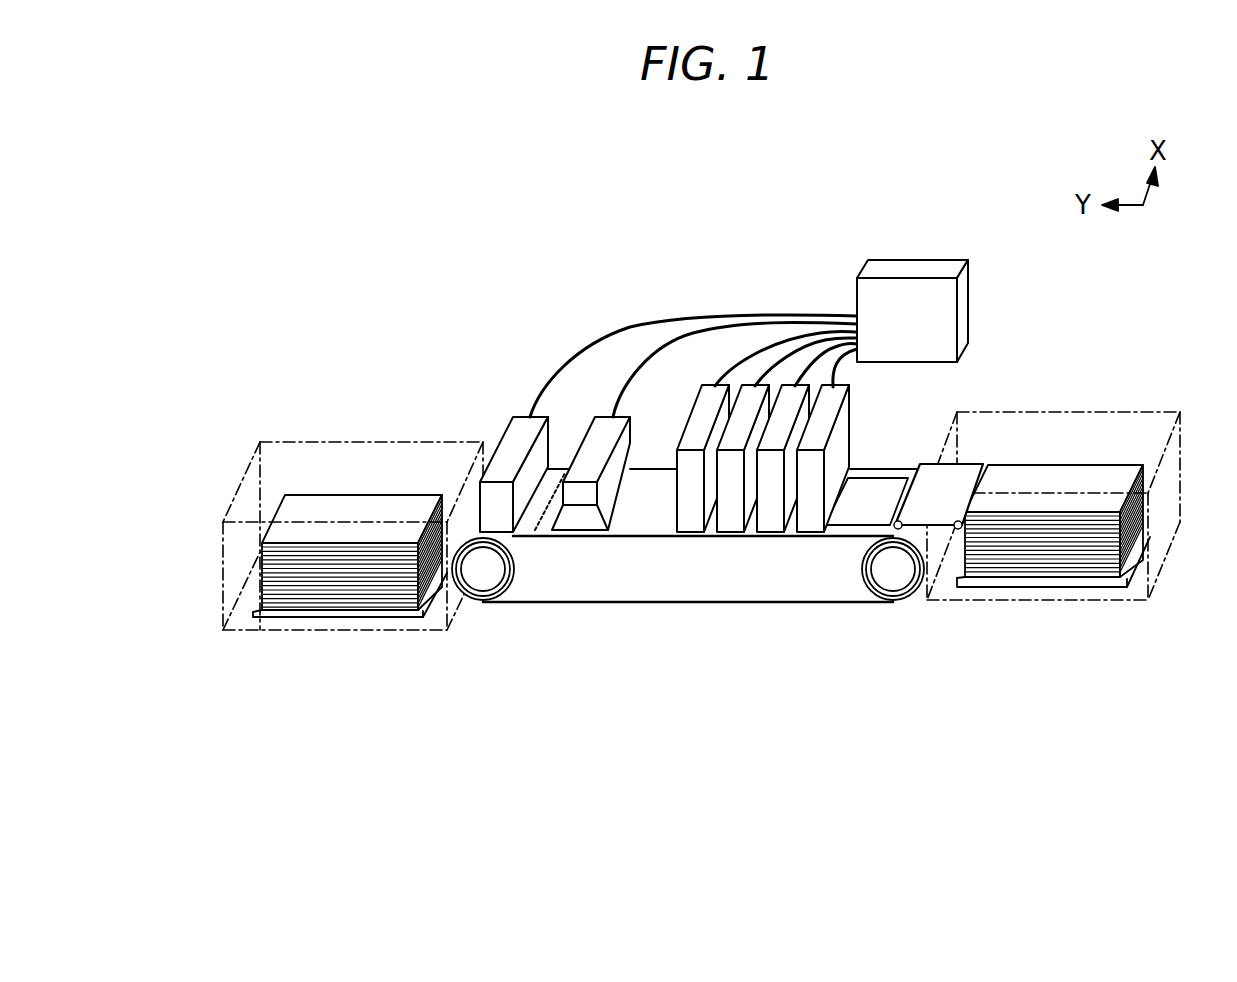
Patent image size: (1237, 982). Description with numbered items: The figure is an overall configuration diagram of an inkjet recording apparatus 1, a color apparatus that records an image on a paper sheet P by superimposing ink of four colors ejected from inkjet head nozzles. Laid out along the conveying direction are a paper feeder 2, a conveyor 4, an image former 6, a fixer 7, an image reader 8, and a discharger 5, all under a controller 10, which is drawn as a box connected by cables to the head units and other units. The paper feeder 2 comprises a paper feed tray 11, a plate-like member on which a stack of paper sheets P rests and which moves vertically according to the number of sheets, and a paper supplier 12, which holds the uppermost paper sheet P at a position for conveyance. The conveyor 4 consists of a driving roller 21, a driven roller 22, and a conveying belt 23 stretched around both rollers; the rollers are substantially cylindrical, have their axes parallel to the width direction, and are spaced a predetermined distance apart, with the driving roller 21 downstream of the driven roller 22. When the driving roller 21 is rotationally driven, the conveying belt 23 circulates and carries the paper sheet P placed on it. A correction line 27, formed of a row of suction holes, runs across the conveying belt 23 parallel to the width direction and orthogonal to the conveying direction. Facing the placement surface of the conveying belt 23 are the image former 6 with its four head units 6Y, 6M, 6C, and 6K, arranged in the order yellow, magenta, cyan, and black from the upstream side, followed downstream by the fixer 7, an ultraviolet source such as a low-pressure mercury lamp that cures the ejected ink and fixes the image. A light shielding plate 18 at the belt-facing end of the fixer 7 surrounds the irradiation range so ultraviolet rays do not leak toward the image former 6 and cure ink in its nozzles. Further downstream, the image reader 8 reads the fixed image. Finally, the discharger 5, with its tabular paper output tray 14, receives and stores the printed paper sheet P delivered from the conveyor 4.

The inkjet recording apparatus 1 is at (1055, 154).
The paper feeder 2 is at (1120, 412).
The conveyor 4 is at (688, 559).
The discharger 5 is at (367, 440).
The image former 6 is at (765, 576).
The head unit 6K is at (692, 523).
The head unit 6C is at (733, 523).
The head unit 6M is at (770, 523).
The head unit 6Y is at (810, 523).
The fixer 7 is at (606, 426).
The image reader 8 is at (519, 422).
The controller 10 is at (915, 258).
The paper feed tray 11 is at (1022, 588).
The paper supplier 12 is at (927, 462).
The paper output tray 14 is at (297, 617).
The light shielding plate 18 is at (635, 463).
The driving roller 21 is at (480, 580).
The driven roller 22 is at (890, 582).
The conveying belt 23 is at (701, 536).
The correction line 27 is at (547, 540).
The paper sheet P is at (300, 513).